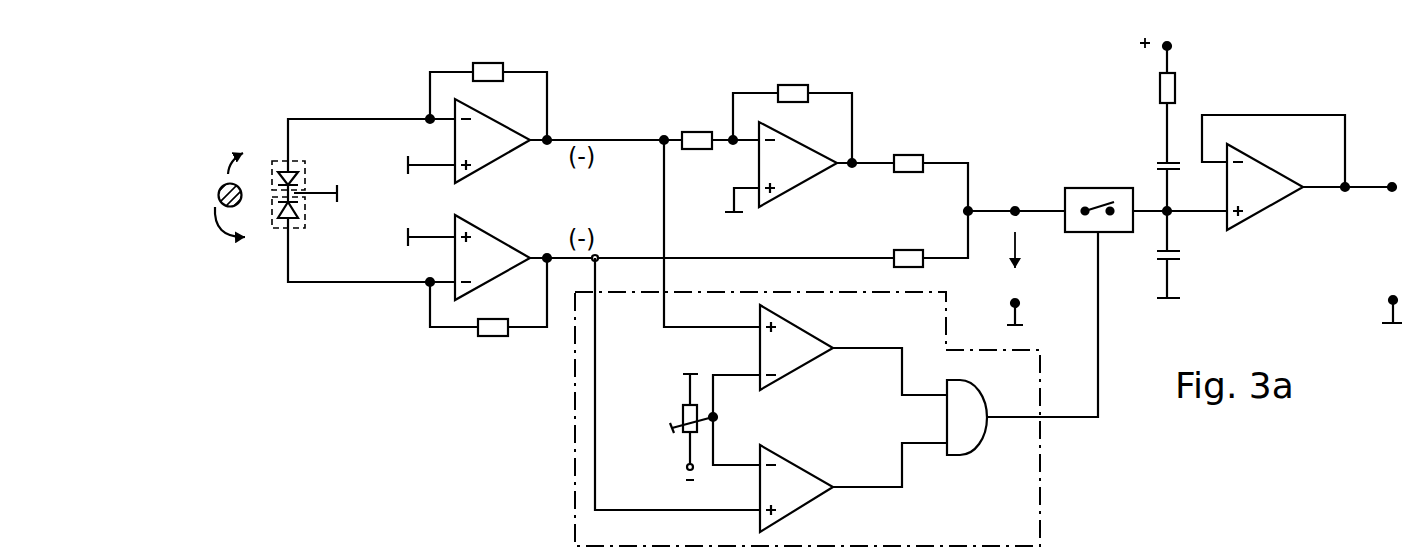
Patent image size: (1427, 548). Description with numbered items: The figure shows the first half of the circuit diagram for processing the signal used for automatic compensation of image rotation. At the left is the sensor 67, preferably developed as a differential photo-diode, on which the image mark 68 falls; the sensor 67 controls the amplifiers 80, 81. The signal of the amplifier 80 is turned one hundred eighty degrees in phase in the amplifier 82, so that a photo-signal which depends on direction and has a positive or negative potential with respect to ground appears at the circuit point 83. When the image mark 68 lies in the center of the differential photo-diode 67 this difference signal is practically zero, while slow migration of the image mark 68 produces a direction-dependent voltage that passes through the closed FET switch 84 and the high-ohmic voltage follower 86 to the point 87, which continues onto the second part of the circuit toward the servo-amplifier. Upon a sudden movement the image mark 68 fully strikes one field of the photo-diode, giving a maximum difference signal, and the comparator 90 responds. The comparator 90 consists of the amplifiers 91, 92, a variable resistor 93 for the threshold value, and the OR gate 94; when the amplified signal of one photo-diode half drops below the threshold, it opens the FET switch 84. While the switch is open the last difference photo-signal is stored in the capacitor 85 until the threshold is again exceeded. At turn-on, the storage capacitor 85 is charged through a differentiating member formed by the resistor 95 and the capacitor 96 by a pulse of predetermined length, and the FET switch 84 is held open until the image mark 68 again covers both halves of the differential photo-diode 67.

The sensor 67 is at (278, 230).
The image mark 68 is at (229, 212).
The amplifier 80 is at (416, 100).
The amplifier 81 is at (447, 344).
The amplifier 82 is at (722, 88).
The circuit point 83 is at (1013, 205).
The FET switch 84 is at (1088, 195).
The capacitor 85 is at (1181, 255).
The high-ohmic voltage follower 86 is at (1288, 100).
The point 87 is at (1392, 183).
The comparator 90 is at (1040, 475).
The amplifier 91 is at (803, 503).
The amplifier 92 is at (810, 328).
The variable resistor 93 is at (683, 405).
The OR gate 94 is at (985, 400).
The resistor 95 is at (1176, 88).
The capacitor 96 is at (1163, 160).